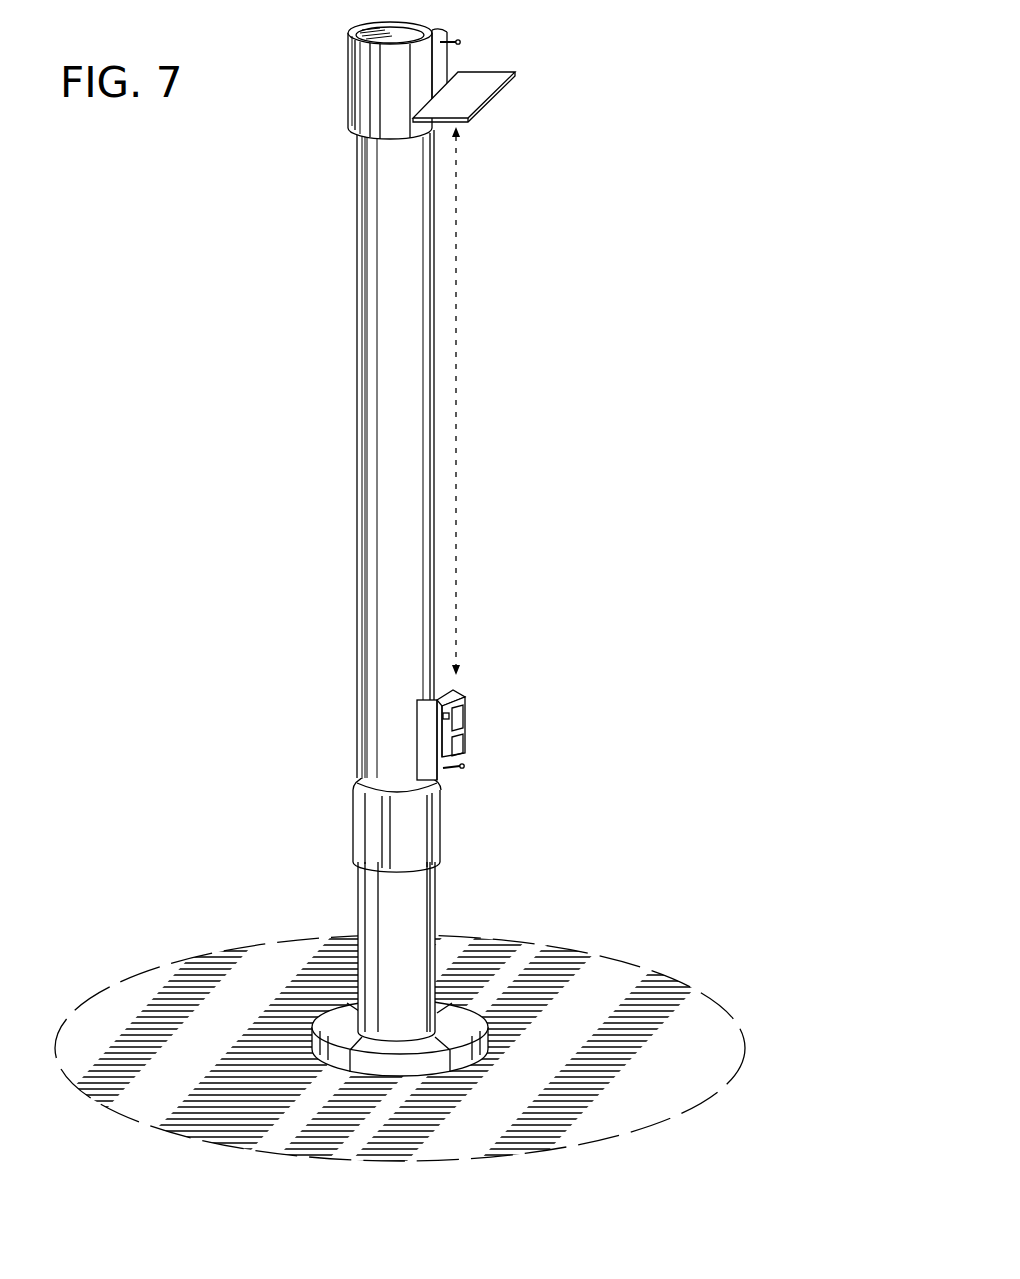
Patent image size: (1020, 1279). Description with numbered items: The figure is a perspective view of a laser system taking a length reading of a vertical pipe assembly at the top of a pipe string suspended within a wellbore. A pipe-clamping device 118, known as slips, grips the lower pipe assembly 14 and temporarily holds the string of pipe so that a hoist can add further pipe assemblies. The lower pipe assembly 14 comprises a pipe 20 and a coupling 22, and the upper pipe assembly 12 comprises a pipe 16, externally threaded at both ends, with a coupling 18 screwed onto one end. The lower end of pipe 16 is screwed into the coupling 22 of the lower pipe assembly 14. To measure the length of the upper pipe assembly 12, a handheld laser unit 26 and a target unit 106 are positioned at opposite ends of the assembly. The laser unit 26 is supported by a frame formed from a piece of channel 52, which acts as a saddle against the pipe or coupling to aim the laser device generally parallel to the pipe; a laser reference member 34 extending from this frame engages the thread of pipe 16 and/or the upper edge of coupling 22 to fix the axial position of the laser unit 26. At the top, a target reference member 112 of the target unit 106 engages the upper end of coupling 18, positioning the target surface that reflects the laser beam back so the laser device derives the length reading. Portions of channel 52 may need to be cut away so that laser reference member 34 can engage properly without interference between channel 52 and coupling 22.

The pipe assembly 12 is at (358, 363).
The pipe assembly 14 is at (358, 893).
The pipe 16 is at (358, 563).
The coupling 18 is at (348, 78).
The pipe 20 is at (438, 922).
The coupling 22 is at (353, 810).
The handheld laser unit 26 is at (435, 703).
The laser reference member 34 is at (447, 772).
The channel 52 is at (417, 735).
The target unit 106 is at (507, 110).
The target reference member 112 is at (452, 40).
The pipe-clamping device 118 is at (463, 1055).